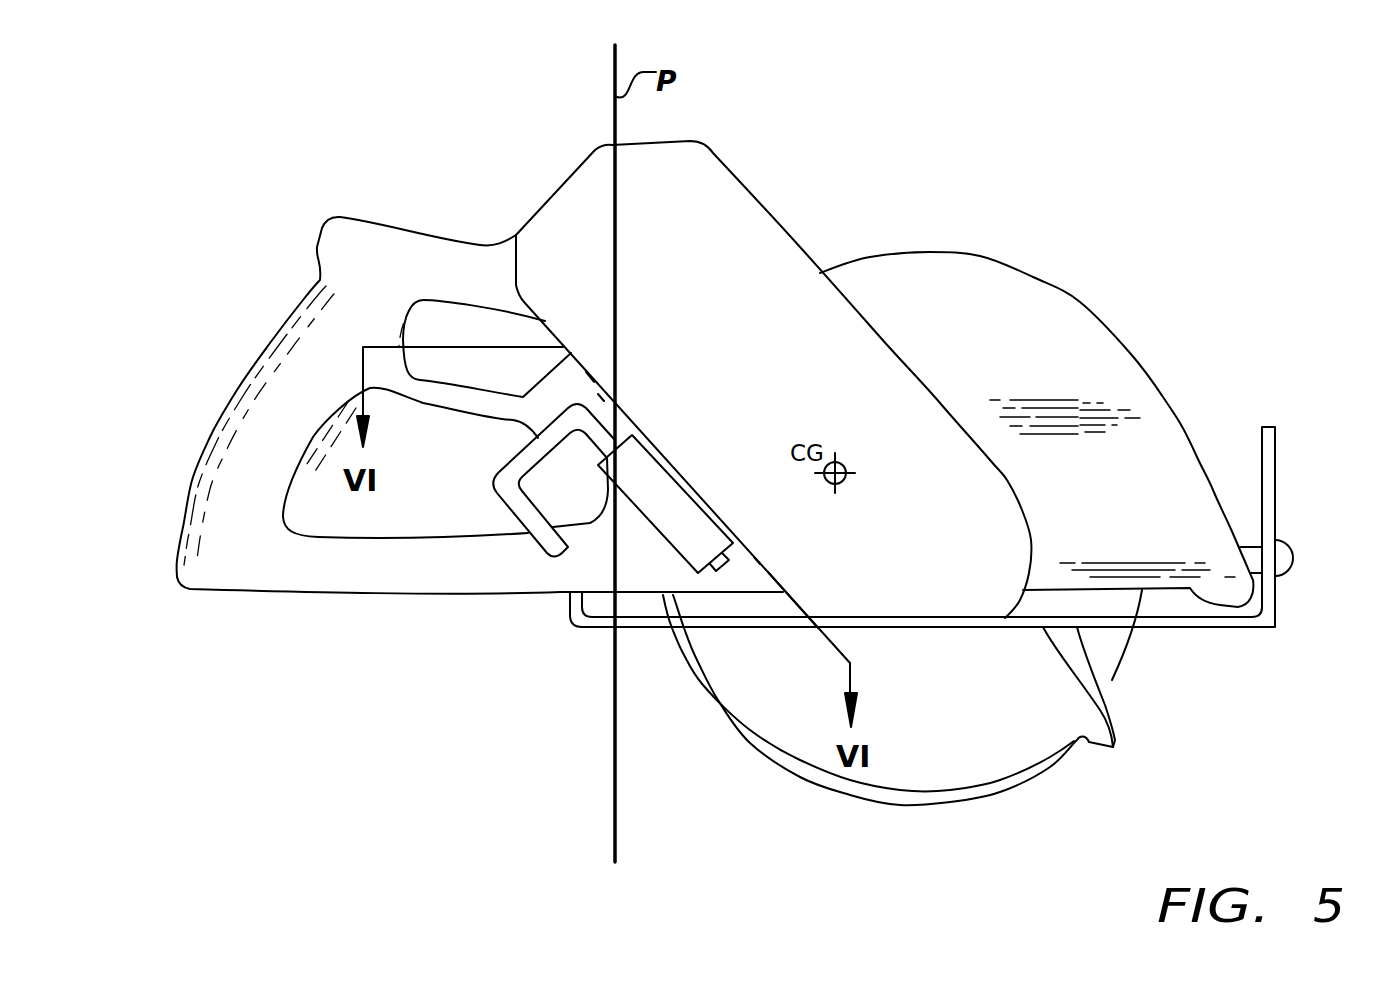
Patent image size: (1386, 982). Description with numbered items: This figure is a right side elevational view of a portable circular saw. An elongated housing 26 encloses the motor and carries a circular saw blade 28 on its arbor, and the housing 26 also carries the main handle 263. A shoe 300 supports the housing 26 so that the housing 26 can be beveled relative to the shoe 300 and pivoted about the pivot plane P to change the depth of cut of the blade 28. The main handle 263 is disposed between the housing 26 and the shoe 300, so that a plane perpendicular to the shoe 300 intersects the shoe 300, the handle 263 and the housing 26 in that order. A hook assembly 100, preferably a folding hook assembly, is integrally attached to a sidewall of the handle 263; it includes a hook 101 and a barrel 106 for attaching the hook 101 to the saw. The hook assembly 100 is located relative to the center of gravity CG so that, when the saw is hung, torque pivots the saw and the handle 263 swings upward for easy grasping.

The housing 26 is at (731, 207).
The circular saw blade 28 is at (1110, 640).
The hook assembly 100 is at (568, 554).
The hook 101 is at (527, 455).
The barrel 106 is at (686, 515).
The main handle 263 is at (395, 258).
The shoe 300 is at (597, 628).